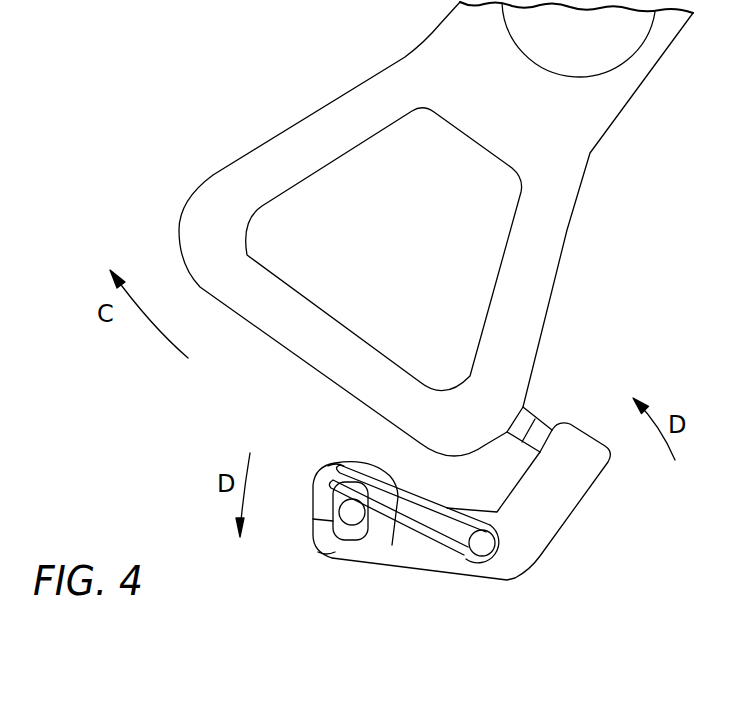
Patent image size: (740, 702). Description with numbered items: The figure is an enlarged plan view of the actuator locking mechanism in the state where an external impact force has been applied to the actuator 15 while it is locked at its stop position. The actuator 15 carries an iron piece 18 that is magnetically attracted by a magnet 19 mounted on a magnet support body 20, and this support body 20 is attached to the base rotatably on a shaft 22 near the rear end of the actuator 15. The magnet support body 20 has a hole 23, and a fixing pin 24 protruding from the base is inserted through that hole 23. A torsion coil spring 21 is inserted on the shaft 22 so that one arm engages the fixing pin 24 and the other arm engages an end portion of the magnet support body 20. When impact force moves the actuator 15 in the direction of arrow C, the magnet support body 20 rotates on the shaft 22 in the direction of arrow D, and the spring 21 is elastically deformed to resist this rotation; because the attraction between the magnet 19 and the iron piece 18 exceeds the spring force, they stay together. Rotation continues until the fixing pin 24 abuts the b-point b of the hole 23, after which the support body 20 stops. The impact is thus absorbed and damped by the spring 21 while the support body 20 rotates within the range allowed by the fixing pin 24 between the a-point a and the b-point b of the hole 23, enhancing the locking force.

The actuator 15 is at (565, 243).
The iron piece 18 is at (530, 413).
The magnet 19 is at (543, 432).
The magnet support body 20 is at (585, 478).
The torsion coil spring 21 is at (425, 540).
The shaft 22 is at (482, 552).
The hole 23 is at (322, 519).
The fixing pin 24 is at (353, 518).
The a-point of the hole a is at (323, 553).
The b-point of the hole b is at (332, 465).